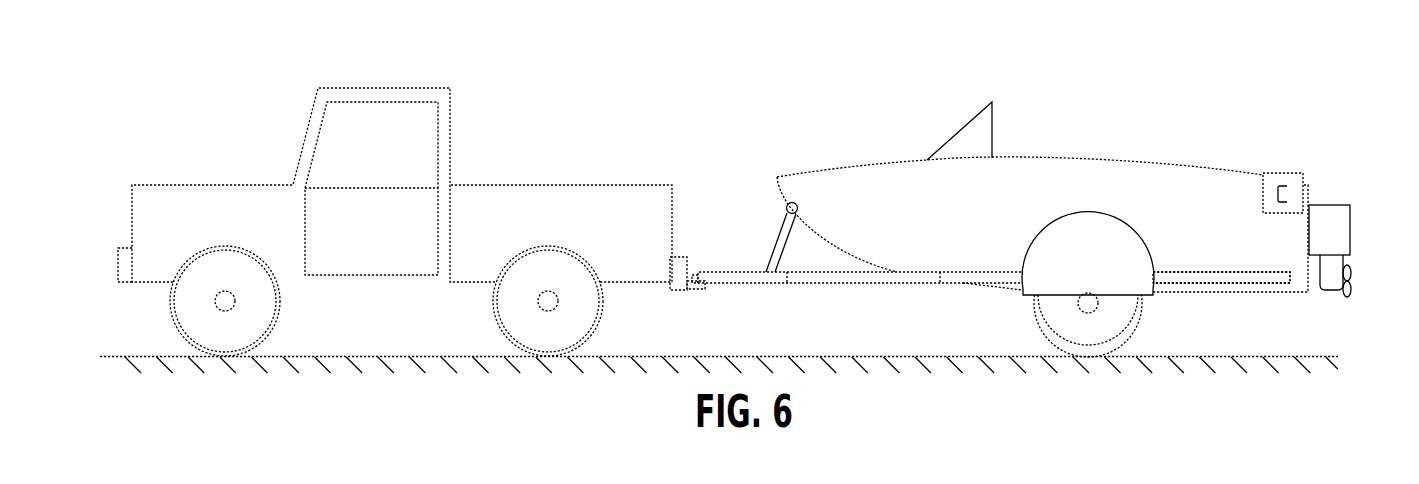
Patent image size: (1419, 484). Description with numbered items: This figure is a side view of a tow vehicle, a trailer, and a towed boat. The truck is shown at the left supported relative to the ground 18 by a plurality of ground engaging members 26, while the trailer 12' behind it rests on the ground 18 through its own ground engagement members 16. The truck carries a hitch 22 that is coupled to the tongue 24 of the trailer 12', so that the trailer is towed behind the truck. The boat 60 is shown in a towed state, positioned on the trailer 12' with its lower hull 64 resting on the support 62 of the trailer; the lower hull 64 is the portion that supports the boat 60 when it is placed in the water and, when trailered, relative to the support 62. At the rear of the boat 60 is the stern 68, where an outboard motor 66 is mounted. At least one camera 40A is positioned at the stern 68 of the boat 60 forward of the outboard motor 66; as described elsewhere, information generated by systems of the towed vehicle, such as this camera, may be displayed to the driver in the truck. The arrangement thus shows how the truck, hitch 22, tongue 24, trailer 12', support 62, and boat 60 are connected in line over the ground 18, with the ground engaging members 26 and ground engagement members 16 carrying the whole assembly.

The trailer 12' is at (1035, 211).
The ground engagement members 16 is at (1112, 335).
The ground 18 is at (957, 356).
The hitch 22 is at (703, 293).
The tongue 24 is at (730, 265).
The ground engaging members 26 is at (223, 342).
The camera 40A is at (1283, 172).
The boat 60 is at (1088, 195).
The support 62 is at (1190, 275).
The lower hull 64 is at (924, 233).
The outboard motor 66 is at (1350, 230).
The stern 68 is at (1323, 192).